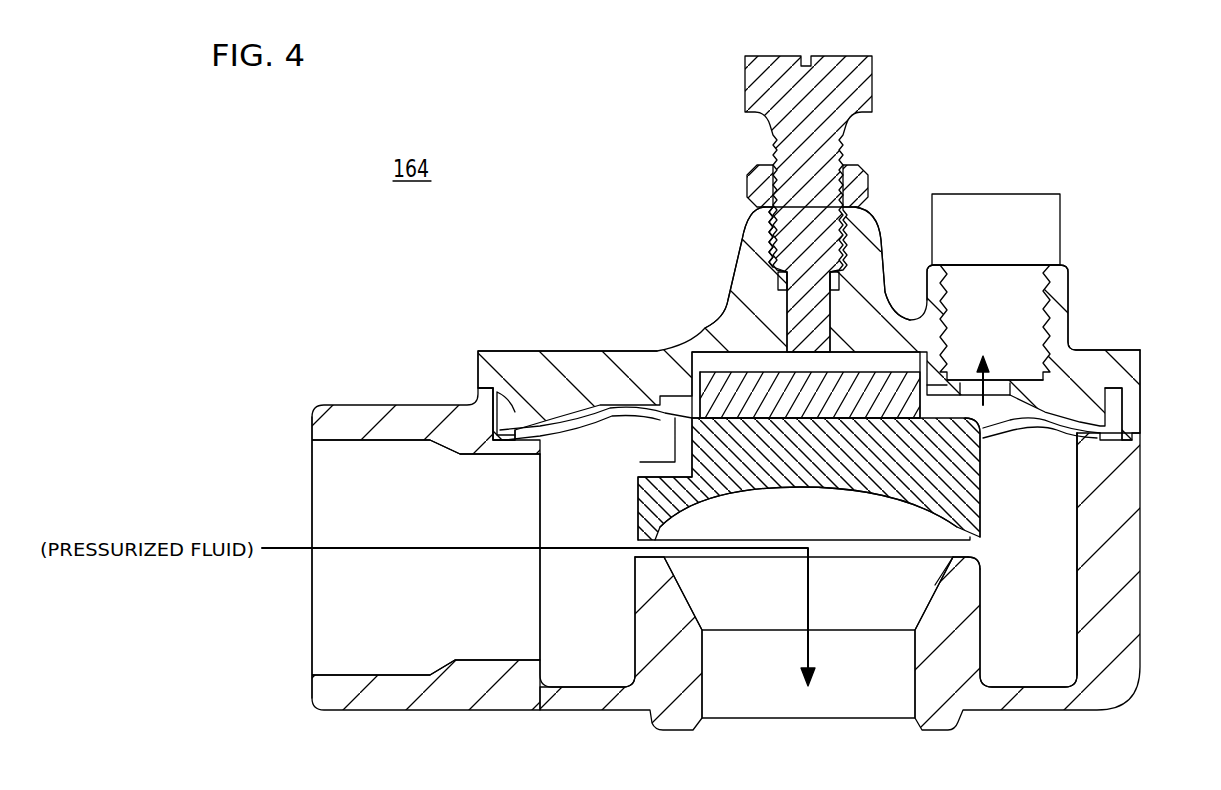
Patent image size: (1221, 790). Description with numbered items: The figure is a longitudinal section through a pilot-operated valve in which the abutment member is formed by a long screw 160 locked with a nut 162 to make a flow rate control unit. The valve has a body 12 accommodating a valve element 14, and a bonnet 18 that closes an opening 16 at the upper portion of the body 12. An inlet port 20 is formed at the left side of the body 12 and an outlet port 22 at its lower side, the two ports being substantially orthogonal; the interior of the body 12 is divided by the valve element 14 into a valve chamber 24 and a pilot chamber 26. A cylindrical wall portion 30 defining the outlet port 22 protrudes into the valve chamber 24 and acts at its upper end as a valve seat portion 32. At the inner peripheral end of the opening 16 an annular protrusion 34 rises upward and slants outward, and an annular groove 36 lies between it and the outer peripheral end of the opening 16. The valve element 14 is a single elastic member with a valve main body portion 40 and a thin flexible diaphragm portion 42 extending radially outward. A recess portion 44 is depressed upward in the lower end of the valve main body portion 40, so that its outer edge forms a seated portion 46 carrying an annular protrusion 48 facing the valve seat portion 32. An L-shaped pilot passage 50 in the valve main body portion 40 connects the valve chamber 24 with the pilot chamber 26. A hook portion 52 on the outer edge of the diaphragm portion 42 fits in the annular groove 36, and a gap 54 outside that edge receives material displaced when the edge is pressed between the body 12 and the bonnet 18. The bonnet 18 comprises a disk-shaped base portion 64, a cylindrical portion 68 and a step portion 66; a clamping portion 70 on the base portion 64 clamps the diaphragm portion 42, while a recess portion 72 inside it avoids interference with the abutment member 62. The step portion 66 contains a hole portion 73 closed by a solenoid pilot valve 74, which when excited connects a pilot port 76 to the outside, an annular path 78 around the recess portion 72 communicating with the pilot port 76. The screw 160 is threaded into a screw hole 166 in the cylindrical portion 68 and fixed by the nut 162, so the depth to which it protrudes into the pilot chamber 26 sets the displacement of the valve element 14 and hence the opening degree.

The body 12 is at (1152, 612).
The valve element 14 is at (852, 482).
The opening 16 is at (1125, 378).
The bonnet 18 is at (1100, 348).
The inlet port 20 is at (338, 667).
The outlet port 22 is at (710, 678).
The valve chamber 24 is at (1077, 606).
The pilot chamber 26 is at (608, 400).
The cylindrical wall portion 30 is at (968, 636).
The valve seat portion 32 is at (628, 552).
The annular protrusion 34 is at (1083, 432).
The annular groove 36 is at (1125, 438).
The valve main body portion 40 is at (965, 520).
The diaphragm portion 42 is at (1000, 438).
The recess portion 44 is at (790, 492).
The seated portion 46 is at (990, 540).
The annular protrusion 48 is at (948, 561).
The pilot passage 50 is at (640, 472).
The hook portion 52 is at (502, 442).
The gap 54 is at (492, 389).
The abutment member 62 is at (868, 372).
The base portion 64 is at (517, 352).
The step portion 66 is at (1062, 292).
The cylindrical portion 68 is at (748, 263).
The clamping portion 70 is at (1128, 410).
The recess portion 72 is at (752, 355).
The hole portion 73 is at (1008, 313).
The pilot valve 74 is at (1040, 228).
The pilot port 76 is at (990, 385).
The annular path 78 is at (950, 385).
The screw 160 is at (860, 104).
The nut 162 is at (862, 187).
The screw hole 166 is at (790, 236).